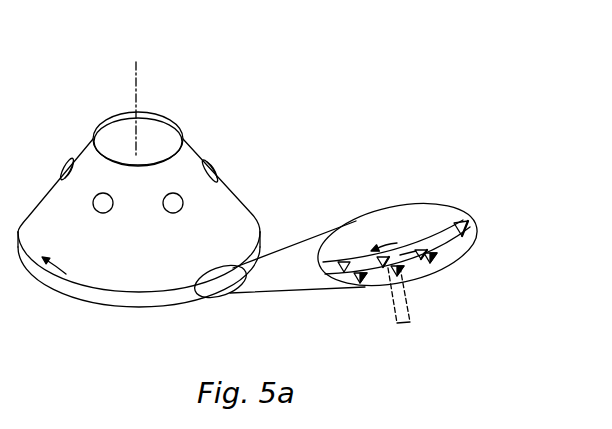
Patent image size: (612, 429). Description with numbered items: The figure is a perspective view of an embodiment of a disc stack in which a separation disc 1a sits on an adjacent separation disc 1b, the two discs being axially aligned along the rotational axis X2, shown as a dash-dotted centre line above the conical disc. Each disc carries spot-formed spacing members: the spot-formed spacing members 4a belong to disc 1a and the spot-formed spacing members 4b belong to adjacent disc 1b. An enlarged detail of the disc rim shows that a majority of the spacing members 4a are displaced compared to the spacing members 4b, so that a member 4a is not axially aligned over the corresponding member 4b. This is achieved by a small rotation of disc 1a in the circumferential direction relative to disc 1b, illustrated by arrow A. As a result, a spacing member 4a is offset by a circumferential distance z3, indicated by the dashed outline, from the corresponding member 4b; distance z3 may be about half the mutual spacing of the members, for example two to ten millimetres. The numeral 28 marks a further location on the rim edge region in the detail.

The separation disc 1a is at (112, 292).
The adjacent separation disc 1b is at (132, 308).
The spot-formed spacing members 4a is at (343, 264).
The spot-formed spacing members 4b is at (362, 281).
The edge region between surfaces 28 is at (408, 257).
The circumferential distance z3 is at (403, 327).
The arrow A is at (57, 274).
The rotational axis X2 is at (137, 99).